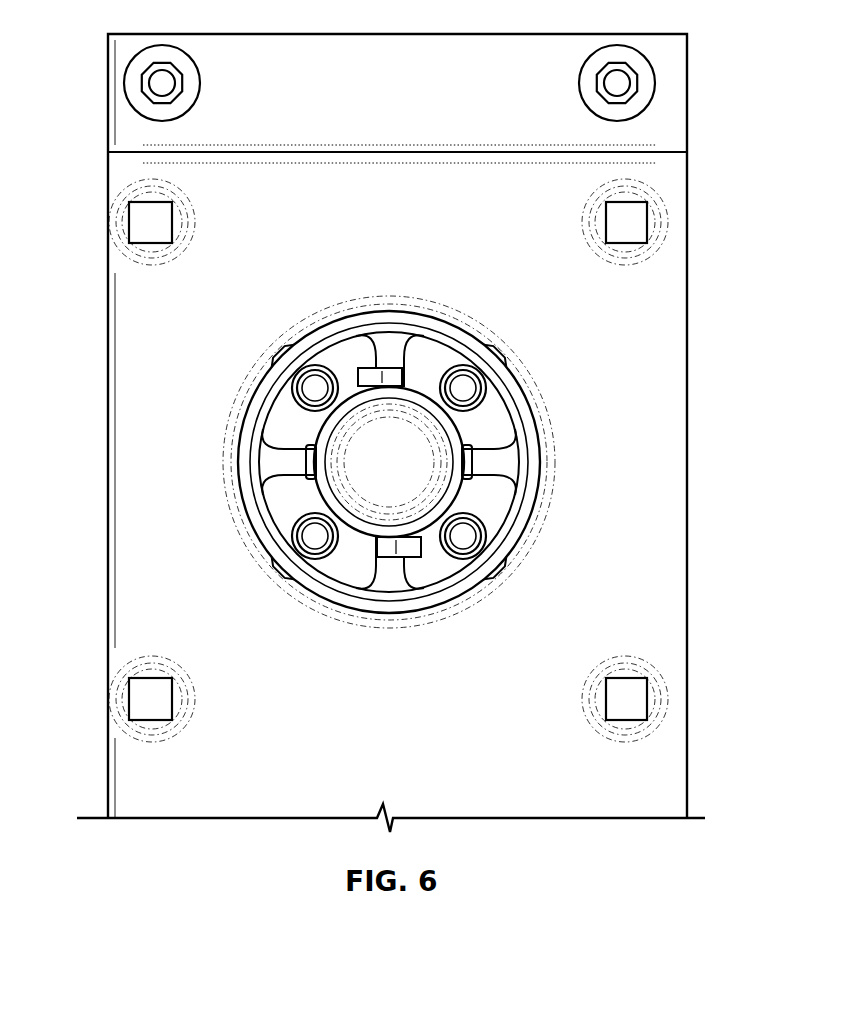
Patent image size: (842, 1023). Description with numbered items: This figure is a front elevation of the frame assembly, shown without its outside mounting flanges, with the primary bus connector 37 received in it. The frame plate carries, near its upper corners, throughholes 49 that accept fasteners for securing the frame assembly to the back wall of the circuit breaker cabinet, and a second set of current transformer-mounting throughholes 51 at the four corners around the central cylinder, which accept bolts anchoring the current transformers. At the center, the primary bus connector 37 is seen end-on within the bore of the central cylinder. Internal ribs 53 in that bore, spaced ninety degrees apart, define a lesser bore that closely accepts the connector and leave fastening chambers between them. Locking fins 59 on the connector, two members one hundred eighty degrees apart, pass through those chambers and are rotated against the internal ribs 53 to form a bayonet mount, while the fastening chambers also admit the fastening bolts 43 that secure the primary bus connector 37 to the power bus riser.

The primary bus connector 37 is at (405, 482).
The fastening bolts 43 is at (307, 378).
The throughholes 49 is at (142, 83).
The current transformer-mounting throughholes 51 is at (130, 221).
The internal ribs 53 is at (275, 458).
The locking fins 59 is at (358, 372).